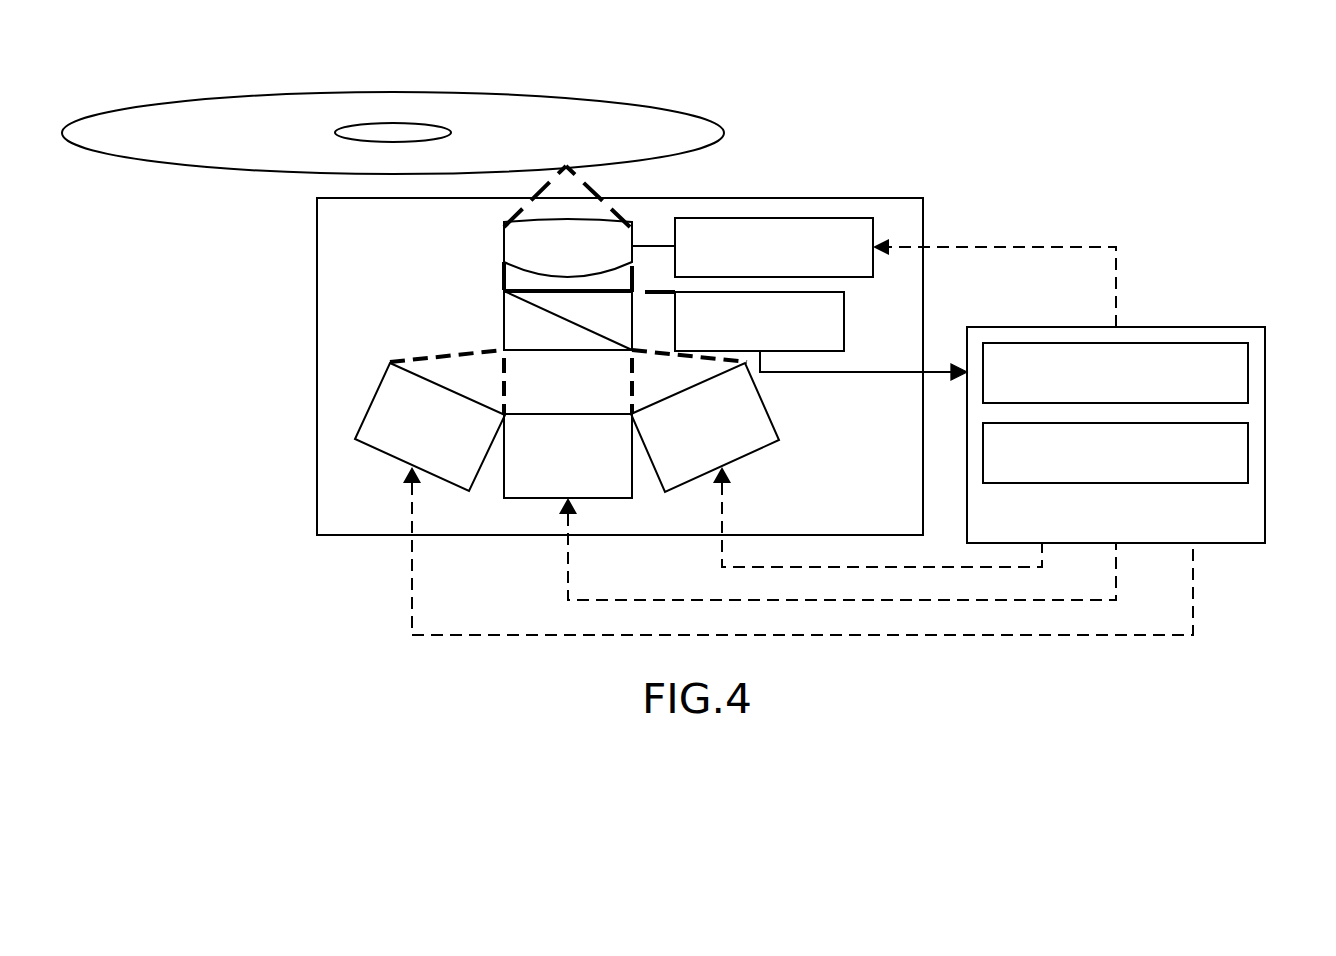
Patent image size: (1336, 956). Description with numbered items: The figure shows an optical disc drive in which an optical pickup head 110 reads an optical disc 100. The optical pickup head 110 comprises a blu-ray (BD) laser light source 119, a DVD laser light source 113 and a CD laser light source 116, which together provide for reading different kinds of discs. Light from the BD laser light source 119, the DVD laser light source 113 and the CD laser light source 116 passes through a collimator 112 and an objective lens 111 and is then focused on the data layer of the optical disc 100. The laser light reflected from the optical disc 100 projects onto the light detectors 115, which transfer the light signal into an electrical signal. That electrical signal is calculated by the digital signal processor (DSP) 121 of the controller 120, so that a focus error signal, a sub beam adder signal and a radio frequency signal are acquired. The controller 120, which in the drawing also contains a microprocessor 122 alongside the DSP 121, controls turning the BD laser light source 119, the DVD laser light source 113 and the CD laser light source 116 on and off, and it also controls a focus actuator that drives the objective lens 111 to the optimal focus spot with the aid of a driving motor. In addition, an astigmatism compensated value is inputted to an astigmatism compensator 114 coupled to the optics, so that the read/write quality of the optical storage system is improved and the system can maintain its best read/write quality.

The optical disc 100 is at (650, 123).
The optical pickup head 110 is at (333, 342).
The objective lens 111 is at (595, 237).
The collimator 112 is at (515, 335).
The DVD laser light source 113 is at (382, 433).
The astigmatism compensator 114 is at (807, 230).
The light detectors 115 is at (828, 333).
The CD laser light source 116 is at (758, 423).
The blu-ray (BD) laser light source 119 is at (622, 470).
The controller 120 is at (1147, 421).
The digital signal processor (DSP) 121 is at (1163, 352).
The microprocessor 122 is at (1233, 463).